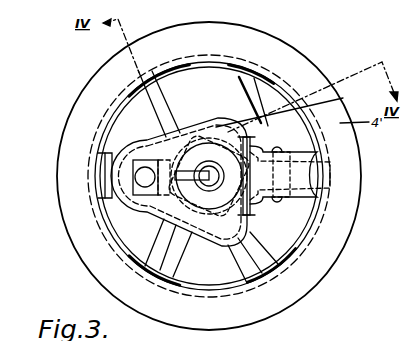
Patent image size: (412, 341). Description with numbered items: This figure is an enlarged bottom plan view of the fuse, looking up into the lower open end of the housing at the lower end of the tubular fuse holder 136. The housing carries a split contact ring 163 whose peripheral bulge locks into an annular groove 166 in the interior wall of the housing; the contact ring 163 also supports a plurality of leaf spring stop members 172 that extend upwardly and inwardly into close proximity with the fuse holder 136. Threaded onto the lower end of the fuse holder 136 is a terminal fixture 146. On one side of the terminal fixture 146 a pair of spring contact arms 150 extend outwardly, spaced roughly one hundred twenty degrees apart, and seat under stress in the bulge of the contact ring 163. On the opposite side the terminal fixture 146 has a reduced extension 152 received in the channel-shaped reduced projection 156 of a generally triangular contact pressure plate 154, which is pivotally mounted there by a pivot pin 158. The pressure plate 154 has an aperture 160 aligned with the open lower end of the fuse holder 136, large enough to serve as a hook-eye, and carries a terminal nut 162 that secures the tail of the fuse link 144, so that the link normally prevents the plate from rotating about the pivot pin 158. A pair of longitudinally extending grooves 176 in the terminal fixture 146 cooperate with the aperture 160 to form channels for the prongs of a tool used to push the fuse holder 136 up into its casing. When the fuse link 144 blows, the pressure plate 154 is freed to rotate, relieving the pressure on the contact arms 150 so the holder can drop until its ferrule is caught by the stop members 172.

The tubular fuse holder 136 is at (263, 133).
The fuse link 144 is at (167, 137).
The terminal fixture 146 is at (224, 242).
The spring contact arms 150 is at (181, 99).
The reduced extension 152 is at (333, 204).
The contact pressure plate 154 is at (159, 211).
The reduced projection 156 is at (308, 151).
The pivot pin 158 is at (293, 108).
The aperture 160 is at (258, 250).
The terminal nut 162 is at (104, 169).
The split contact ring 163 is at (188, 60).
The annular groove 166 is at (102, 116).
The leaf spring stop members 172 is at (222, 138).
The longitudinally extending grooves 176 is at (249, 140).